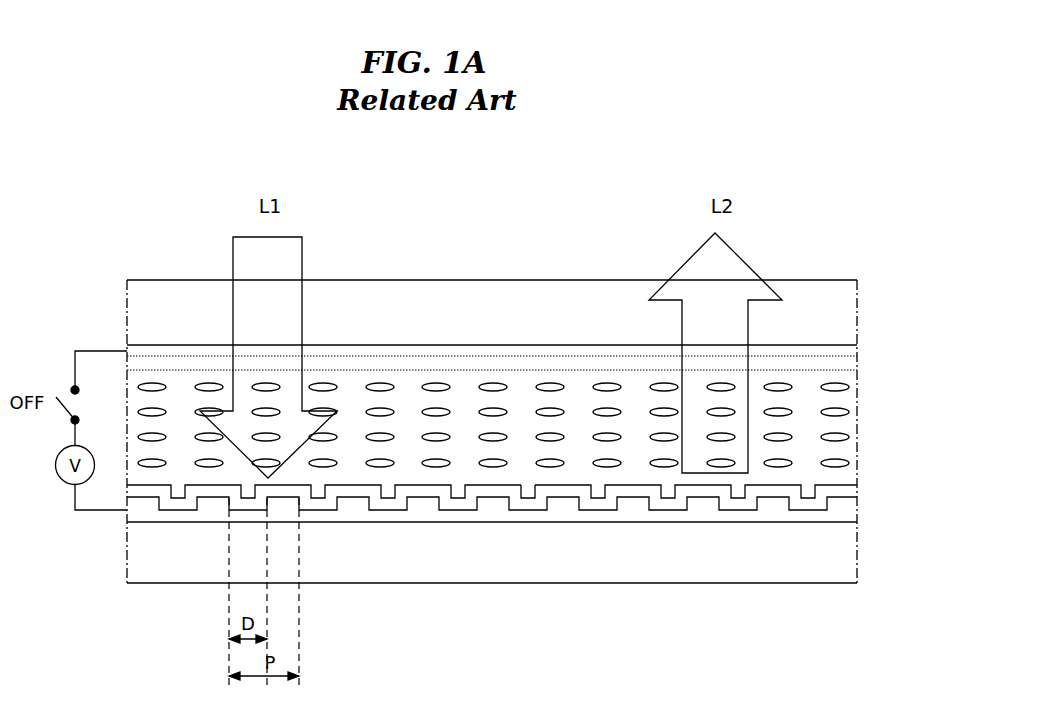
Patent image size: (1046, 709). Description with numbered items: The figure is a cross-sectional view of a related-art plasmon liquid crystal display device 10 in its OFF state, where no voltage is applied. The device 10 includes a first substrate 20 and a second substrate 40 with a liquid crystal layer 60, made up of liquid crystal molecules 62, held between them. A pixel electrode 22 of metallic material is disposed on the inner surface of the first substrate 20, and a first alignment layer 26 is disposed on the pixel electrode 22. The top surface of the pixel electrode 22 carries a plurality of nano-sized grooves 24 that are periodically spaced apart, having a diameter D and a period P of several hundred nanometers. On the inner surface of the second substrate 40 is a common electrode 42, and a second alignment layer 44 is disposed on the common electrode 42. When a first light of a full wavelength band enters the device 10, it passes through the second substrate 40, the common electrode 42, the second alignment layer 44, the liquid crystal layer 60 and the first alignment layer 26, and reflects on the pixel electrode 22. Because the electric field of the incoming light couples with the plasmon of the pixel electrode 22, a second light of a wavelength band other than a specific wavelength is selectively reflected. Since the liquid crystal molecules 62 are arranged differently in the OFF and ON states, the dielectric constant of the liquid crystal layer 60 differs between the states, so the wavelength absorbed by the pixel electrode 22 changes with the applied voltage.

The plasmon liquid crystal display device 10 is at (483, 148).
The first substrate 20 is at (850, 553).
The pixel electrode 22 is at (850, 512).
The grooves 24 is at (527, 474).
The first alignment layer 26 is at (525, 458).
The second substrate 40 is at (850, 303).
The common electrode 42 is at (850, 347).
The second alignment layer 44 is at (850, 364).
The liquid crystal layer 60 is at (530, 425).
The liquid crystal molecules 62 is at (838, 407).